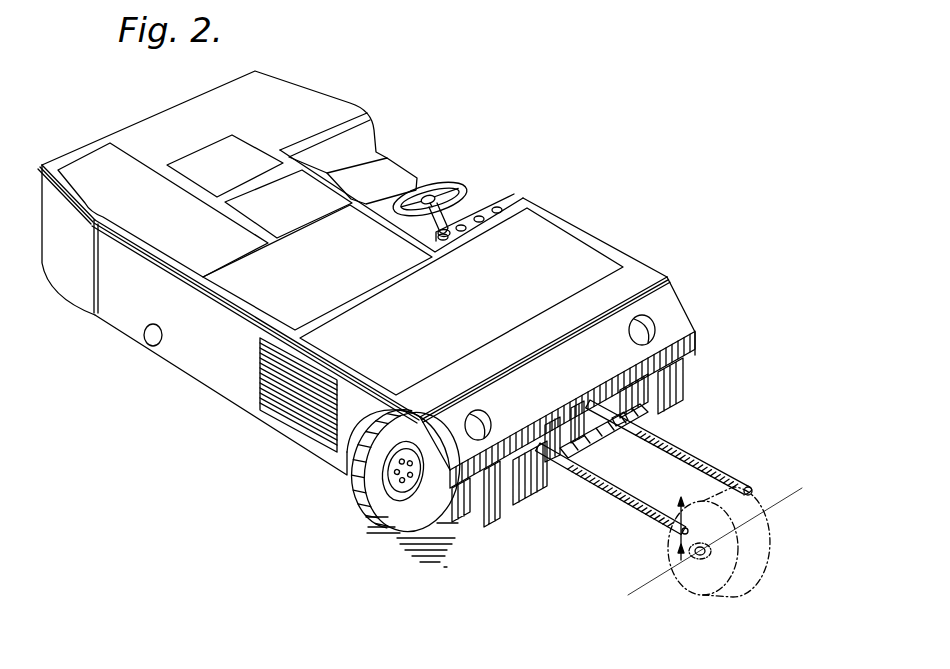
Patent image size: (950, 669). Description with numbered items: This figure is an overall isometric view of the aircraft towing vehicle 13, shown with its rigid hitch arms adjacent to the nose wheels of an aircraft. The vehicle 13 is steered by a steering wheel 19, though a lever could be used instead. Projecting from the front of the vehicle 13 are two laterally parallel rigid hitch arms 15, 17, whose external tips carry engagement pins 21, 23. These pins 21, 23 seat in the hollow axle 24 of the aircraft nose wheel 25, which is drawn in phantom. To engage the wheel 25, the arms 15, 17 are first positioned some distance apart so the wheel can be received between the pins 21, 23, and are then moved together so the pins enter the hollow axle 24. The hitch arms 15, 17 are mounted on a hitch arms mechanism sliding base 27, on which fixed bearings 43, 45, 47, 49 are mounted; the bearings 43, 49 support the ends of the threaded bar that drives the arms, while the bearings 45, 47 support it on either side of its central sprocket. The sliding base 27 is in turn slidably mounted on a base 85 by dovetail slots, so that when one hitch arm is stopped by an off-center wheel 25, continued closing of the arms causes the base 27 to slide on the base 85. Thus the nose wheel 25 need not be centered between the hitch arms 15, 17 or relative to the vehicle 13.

The aircraft towing vehicle 13 is at (572, 223).
The steering wheel 19 is at (468, 182).
The rigid hitch arm 15 is at (612, 496).
The rigid hitch arm 17 is at (682, 440).
The engagement pin 21 is at (684, 505).
The engagement pin 23 is at (746, 483).
The hollow axle 24 is at (688, 558).
The aircraft nose wheel 25 is at (742, 573).
The hitch arms mechanism sliding base 27 is at (620, 428).
The fixed bearing 43 is at (532, 468).
The fixed bearing 45 is at (550, 475).
The fixed bearing 47 is at (634, 438).
The fixed bearing 49 is at (642, 393).
The base 85 is at (603, 445).